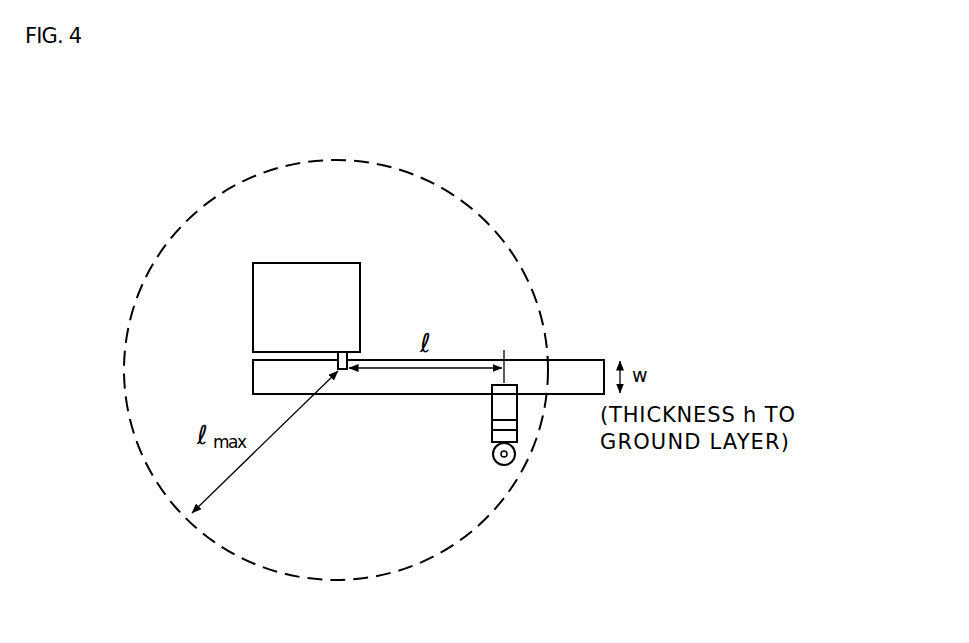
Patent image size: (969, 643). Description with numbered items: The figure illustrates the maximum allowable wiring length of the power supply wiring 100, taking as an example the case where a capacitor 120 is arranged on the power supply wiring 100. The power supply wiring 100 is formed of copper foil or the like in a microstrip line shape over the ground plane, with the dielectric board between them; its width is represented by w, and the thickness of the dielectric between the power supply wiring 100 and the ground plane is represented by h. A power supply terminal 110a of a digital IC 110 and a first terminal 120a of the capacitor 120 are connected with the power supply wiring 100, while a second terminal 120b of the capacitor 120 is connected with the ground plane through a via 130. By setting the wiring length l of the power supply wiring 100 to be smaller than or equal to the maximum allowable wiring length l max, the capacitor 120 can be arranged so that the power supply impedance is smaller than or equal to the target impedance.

The power supply wiring 100 is at (568, 360).
The digital IC 110 is at (253, 312).
The power supply terminal 110a is at (342, 371).
The capacitor 120 is at (492, 410).
The first terminal 120a is at (492, 387).
The second terminal 120b is at (492, 432).
The via 130 is at (516, 455).